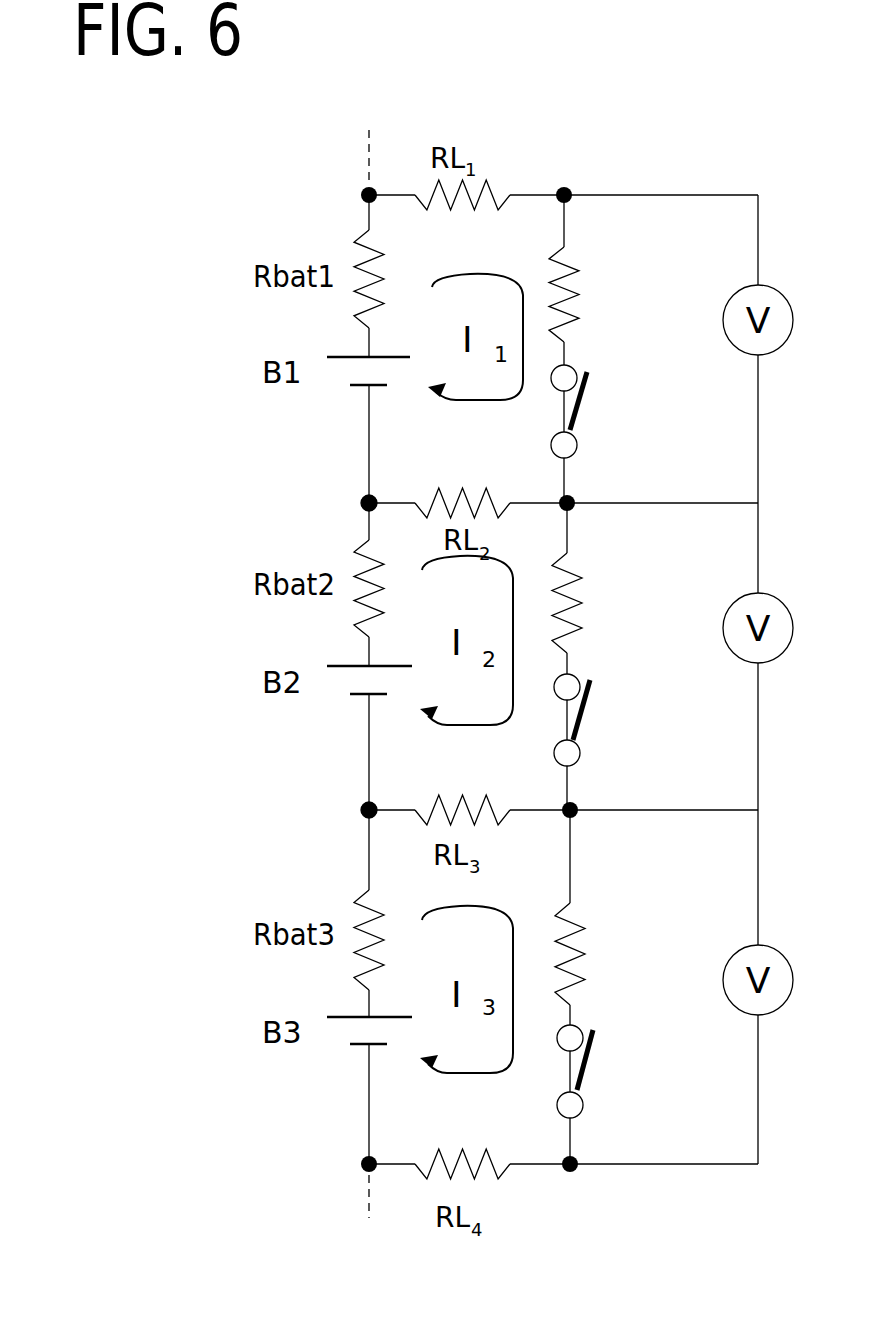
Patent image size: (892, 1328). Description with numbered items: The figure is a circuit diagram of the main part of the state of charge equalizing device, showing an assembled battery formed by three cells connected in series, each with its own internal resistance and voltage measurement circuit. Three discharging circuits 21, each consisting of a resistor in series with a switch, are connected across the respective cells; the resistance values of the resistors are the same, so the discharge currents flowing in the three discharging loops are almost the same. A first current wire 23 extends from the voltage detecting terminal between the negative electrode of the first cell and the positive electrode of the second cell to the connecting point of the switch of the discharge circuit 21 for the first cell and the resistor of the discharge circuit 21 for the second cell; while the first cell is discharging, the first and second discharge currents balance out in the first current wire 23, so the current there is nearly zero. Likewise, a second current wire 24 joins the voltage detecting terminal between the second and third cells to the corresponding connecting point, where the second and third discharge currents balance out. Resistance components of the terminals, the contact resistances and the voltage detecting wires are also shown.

The discharging circuit 21 is at (610, 348).
The first current wire 23 is at (393, 503).
The second current wire 24 is at (393, 810).